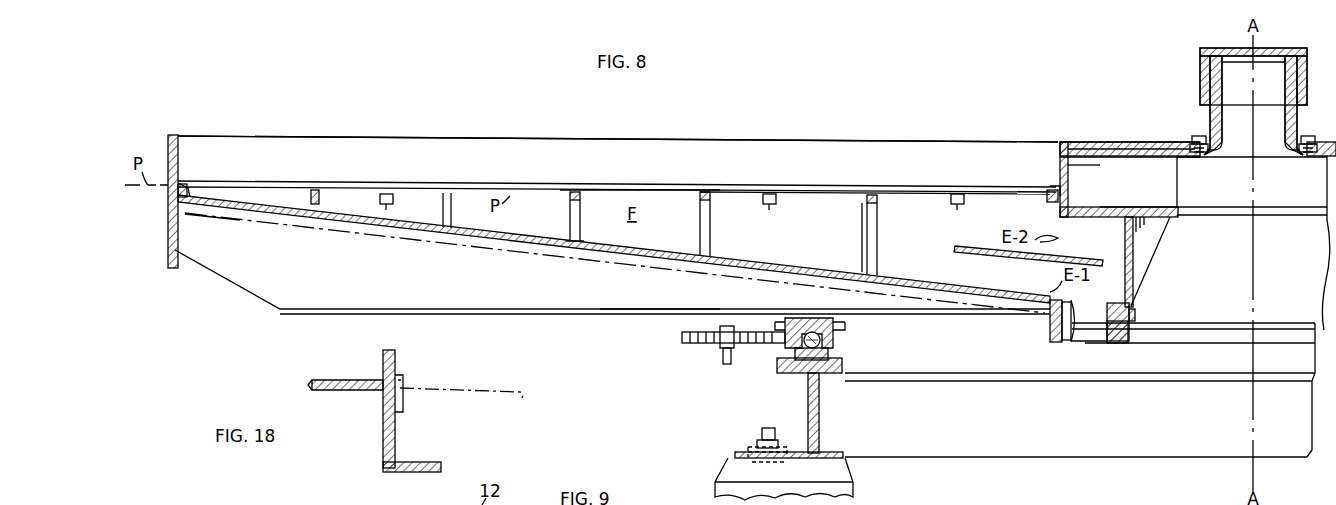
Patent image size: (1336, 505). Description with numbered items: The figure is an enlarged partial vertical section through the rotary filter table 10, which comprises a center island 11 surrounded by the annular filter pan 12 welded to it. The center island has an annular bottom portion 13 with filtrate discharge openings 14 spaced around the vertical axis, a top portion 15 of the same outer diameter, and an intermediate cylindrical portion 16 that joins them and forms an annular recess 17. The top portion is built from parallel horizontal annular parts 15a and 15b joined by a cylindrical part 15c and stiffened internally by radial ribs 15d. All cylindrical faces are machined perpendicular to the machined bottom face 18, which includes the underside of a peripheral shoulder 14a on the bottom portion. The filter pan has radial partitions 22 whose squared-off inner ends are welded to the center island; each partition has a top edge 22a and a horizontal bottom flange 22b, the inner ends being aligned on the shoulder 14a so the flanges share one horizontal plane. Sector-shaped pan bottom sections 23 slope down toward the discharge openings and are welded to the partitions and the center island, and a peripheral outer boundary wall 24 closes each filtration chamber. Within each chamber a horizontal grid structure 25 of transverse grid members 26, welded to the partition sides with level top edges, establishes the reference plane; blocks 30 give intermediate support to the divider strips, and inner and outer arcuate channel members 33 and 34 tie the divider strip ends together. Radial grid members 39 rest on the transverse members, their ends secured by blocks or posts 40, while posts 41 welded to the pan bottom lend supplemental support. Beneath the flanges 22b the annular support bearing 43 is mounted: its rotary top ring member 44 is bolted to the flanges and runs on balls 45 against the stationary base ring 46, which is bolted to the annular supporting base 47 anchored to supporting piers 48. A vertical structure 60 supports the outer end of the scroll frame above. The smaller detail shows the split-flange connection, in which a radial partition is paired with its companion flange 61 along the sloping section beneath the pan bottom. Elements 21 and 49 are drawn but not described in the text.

In FIG. 8, the rotary filter table 10 is at (360, 70).
In FIG. 8, the center island 11 is at (1155, 120).
In FIG. 8, the annular filter pan 12 is at (880, 148).
In FIG. 8, the annular bottom portion 13 is at (1136, 316).
In FIG. 8, the filtrate discharge openings 14 is at (1090, 316).
In FIG. 8, the machined peripheral shoulder 14a is at (1050, 330).
In FIG. 8, the top portion 15 is at (1074, 138).
In FIG. 8, the horizontal annular part 15a is at (1108, 142).
In FIG. 8, the horizontal annular part 15b is at (1118, 207).
In FIG. 8, the cylindrical part 15c is at (1070, 184).
In FIG. 8, the radial ribs 15d is at (1177, 184).
In FIG. 8, the intermediate cylindrical portion 16 is at (1125, 247).
In FIG. 8, the annular recess 17 is at (1116, 262).
In FIG. 8, the machined bottom face 18 is at (1088, 330).
In FIG. 8, the brace 21 is at (1162, 250).
In FIG. 8, the radial partitions 22 is at (522, 292).
In FIG. 8, the top edge 22a is at (280, 228).
In FIG. 8, the horizontal bottom flange 22b is at (660, 316).
In FIG. 8, the pan bottom sections 23 is at (531, 240).
In FIG. 18, the pan bottom sections 23 is at (353, 381).
In FIG. 8, the peripheral outer boundary wall 24 is at (168, 148).
In FIG. 8, the horizontal grid structure 25 is at (920, 194).
In FIG. 8, the transverse horizontal grid members 26 is at (570, 200).
In FIG. 8, the blocks 30 is at (386, 206).
In FIG. 8, the inner arcuate channel member 33 is at (1055, 190).
In FIG. 8, the outer arcuate channel member 34 is at (184, 188).
In FIG. 8, the radial grid members 39 is at (609, 192).
In FIG. 8, the blocks or posts 40 is at (205, 190).
In FIG. 8, the posts 41 is at (700, 230).
In FIG. 8, the annular support bearing 43 is at (842, 338).
In FIG. 8, the rotary top ring member 44 is at (812, 330).
In FIG. 8, the balls 45 is at (824, 346).
In FIG. 8, the stationary base ring 46 is at (805, 362).
In FIG. 8, the annular supporting base 47 is at (820, 396).
In FIG. 8, the supporting piers 48 is at (838, 476).
In FIG. 8, the block 49 is at (1118, 344).
In FIG. 8, the vertical structure 60 is at (1200, 68).
In FIG. 18, the companion flange 61 is at (400, 420).